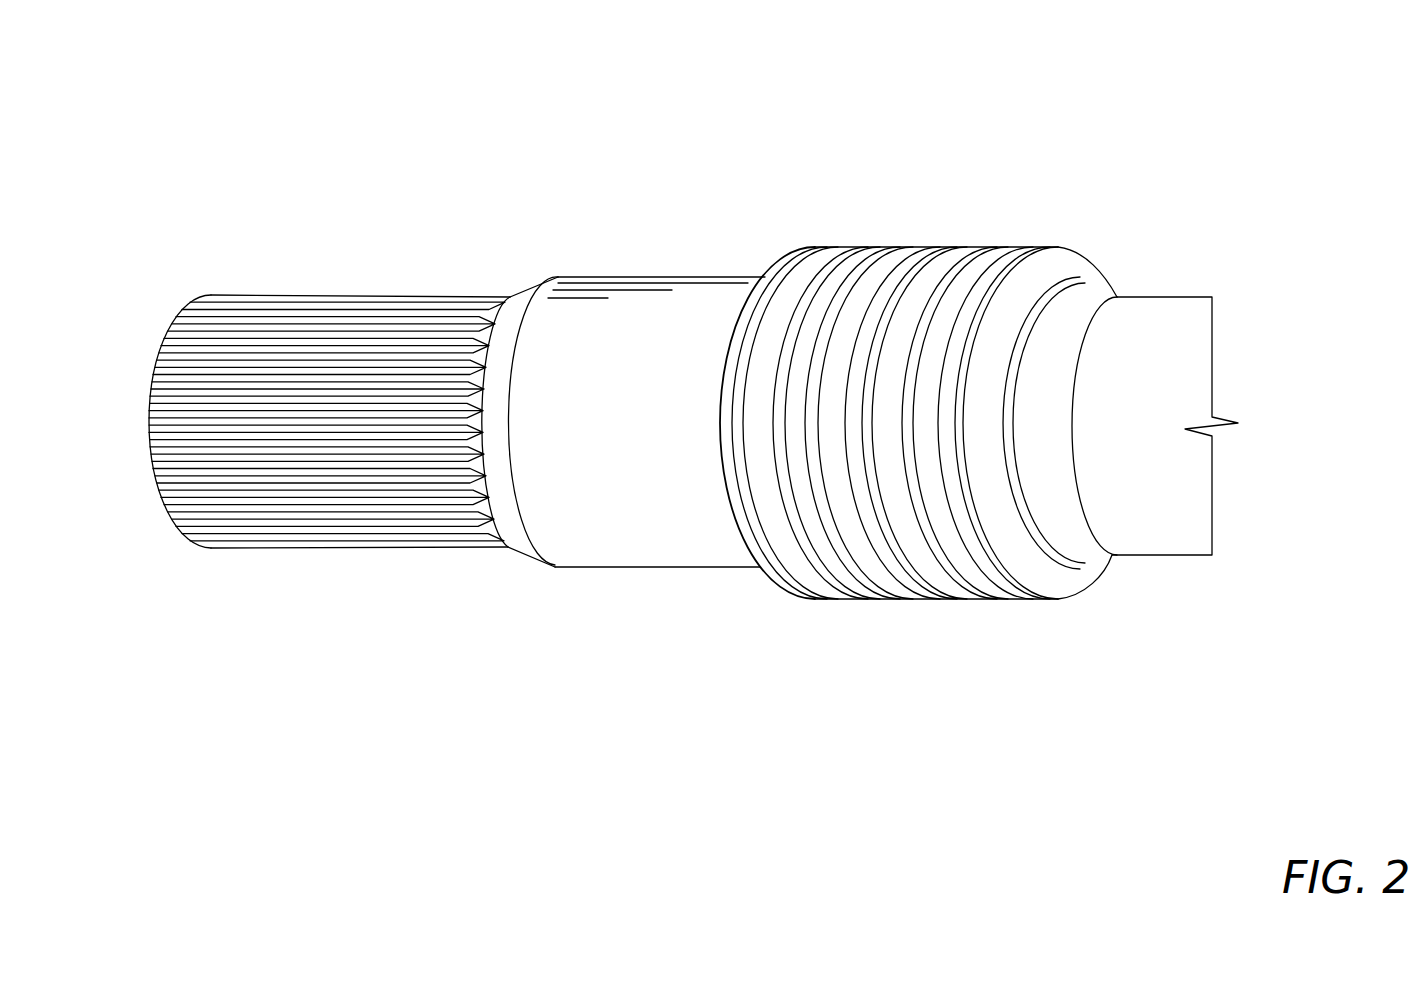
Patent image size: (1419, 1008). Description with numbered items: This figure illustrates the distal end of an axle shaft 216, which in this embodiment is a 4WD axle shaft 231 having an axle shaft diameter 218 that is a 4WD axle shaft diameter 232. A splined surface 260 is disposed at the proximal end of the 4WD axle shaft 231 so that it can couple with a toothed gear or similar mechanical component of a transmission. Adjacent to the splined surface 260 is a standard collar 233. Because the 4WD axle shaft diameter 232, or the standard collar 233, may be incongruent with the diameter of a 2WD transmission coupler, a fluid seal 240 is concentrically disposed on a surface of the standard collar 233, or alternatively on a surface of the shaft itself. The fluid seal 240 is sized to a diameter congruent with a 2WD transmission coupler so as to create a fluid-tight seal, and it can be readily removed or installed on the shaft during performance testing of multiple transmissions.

The axle shaft 216 is at (1262, 44).
The splined surface 260 is at (257, 270).
The 4WD axle shaft 231 is at (735, 190).
The standard collar 233 is at (618, 277).
The axle shaft diameter 218 is at (693, 567).
The fluid seal 240 is at (982, 228).
The 4WD axle shaft diameter 232 is at (1177, 557).